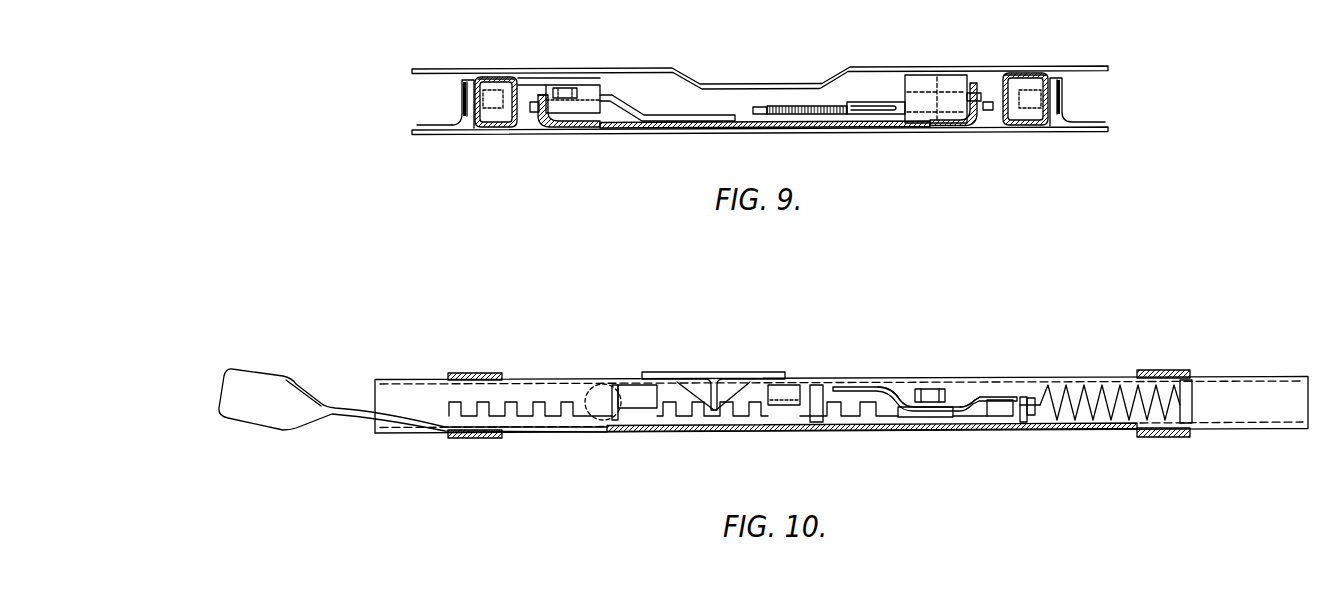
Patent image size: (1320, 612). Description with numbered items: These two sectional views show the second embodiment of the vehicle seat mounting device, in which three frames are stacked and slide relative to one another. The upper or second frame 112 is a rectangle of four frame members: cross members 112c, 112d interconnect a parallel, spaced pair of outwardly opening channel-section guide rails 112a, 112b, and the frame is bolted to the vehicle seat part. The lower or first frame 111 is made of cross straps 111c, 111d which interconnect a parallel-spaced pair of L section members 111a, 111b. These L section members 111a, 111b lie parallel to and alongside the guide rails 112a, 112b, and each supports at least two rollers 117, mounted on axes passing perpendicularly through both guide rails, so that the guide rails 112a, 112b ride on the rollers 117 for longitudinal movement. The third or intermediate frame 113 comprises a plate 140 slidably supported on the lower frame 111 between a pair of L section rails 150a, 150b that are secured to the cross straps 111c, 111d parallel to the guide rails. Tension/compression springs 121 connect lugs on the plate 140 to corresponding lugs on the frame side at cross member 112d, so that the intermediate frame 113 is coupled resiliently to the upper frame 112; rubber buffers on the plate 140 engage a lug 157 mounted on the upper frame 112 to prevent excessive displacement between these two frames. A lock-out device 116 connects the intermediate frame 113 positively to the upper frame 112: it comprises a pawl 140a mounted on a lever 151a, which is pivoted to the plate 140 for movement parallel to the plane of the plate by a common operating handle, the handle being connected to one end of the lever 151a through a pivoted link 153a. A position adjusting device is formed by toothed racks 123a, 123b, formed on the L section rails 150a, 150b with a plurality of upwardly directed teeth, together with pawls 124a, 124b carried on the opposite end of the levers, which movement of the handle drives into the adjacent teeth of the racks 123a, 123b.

In FIG. 9, the lower frame 111 is at (701, 143).
In FIG. 10, the lower frame 111 is at (841, 405).
In FIG. 9, the upper frame 112 is at (657, 65).
In FIG. 9, the L section member 111a is at (428, 123).
In FIG. 9, the L section member 111b is at (1087, 122).
In FIG. 9, the cross strap 111c is at (427, 134).
In FIG. 10, the cross strap 111c is at (463, 438).
In FIG. 10, the cross strap 111d is at (1152, 437).
In FIG. 9, the guide rail 112a is at (483, 76).
In FIG. 9, the guide rail 112b is at (997, 80).
In FIG. 10, the cross member 112c is at (467, 373).
In FIG. 10, the cross member 112d is at (1147, 370).
In FIG. 9, the intermediate frame 113 is at (634, 129).
In FIG. 10, the intermediate frame 113 is at (961, 437).
In FIG. 10, the lock-out device 116 is at (851, 378).
In FIG. 9, the roller 117 is at (487, 113).
In FIG. 10, the tension/compression spring 121 is at (1108, 426).
In FIG. 9, the toothed rack 123a is at (547, 98).
In FIG. 10, the toothed rack 123a is at (550, 417).
In FIG. 9, the toothed rack 123b is at (980, 93).
In FIG. 9, the pawl 124a is at (534, 113).
In FIG. 9, the pawl 124b is at (988, 111).
In FIG. 9, the plate 140 is at (864, 128).
In FIG. 10, the plate 140 is at (820, 423).
In FIG. 10, the pawl 140a is at (845, 386).
In FIG. 9, the L section rail 150a is at (572, 129).
In FIG. 9, the L section rail 150b is at (937, 127).
In FIG. 10, the lever 151a is at (880, 392).
In FIG. 10, the pivoted link 153a is at (977, 398).
In FIG. 10, the lug 157 is at (717, 372).